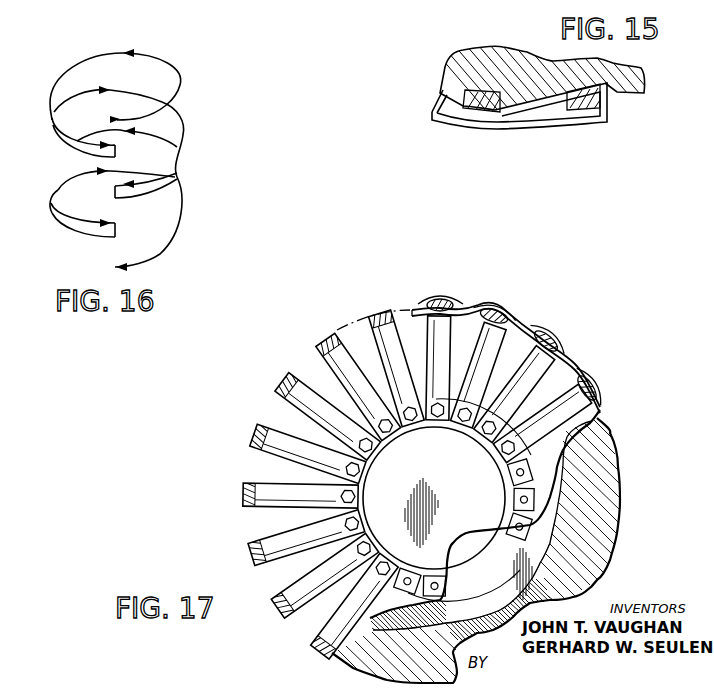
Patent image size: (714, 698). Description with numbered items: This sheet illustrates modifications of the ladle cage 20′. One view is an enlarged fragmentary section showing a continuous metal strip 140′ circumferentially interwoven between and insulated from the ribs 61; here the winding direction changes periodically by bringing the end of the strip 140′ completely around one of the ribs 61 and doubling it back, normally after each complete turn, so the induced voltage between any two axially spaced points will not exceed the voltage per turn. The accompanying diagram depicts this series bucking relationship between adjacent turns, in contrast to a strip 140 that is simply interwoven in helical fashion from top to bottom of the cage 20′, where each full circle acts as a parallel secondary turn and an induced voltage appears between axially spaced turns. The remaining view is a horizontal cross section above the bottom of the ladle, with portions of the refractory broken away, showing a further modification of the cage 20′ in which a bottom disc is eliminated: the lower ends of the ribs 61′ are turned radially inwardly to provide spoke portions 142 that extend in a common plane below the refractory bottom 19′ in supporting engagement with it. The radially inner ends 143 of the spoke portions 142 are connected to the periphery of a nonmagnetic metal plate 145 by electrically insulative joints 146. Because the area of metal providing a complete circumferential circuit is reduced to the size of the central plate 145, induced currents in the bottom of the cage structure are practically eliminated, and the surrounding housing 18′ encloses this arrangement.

In FIG. 15, the continuous metal strip 140′ is at (541, 129).
In FIG. 15, the ribs 61 is at (597, 97).
In FIG. 17, the spoke portions 142 is at (312, 386).
In FIG. 17, the radially inner ends 143 is at (397, 436).
In FIG. 17, the electrically insulative joints 146 is at (377, 453).
In FIG. 17, the nonmagnetic metal plate 145 is at (493, 499).
In FIG. 17, the refractory bottom 19′ is at (505, 590).
In FIG. 17, the housing 18′ is at (600, 551).
In FIG. 17, the continuous metal strip 140 is at (522, 328).
In FIG. 17, the ribs 61′ is at (439, 299).
In FIG. 17, the cage 20′ is at (594, 363).